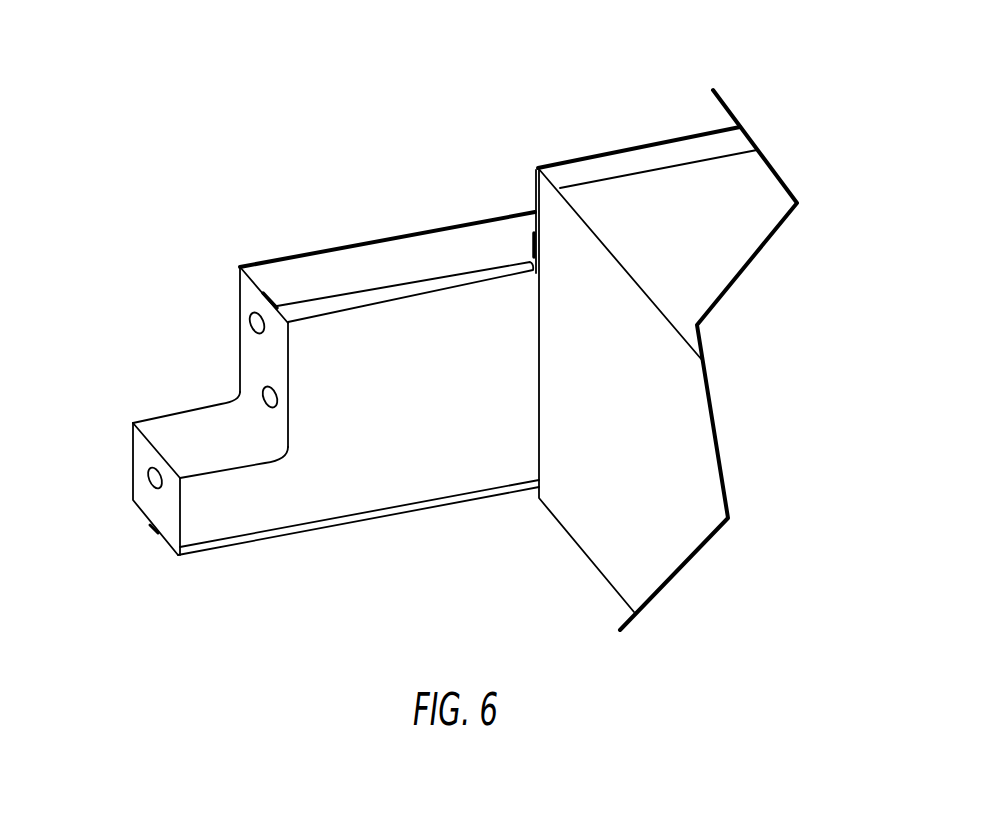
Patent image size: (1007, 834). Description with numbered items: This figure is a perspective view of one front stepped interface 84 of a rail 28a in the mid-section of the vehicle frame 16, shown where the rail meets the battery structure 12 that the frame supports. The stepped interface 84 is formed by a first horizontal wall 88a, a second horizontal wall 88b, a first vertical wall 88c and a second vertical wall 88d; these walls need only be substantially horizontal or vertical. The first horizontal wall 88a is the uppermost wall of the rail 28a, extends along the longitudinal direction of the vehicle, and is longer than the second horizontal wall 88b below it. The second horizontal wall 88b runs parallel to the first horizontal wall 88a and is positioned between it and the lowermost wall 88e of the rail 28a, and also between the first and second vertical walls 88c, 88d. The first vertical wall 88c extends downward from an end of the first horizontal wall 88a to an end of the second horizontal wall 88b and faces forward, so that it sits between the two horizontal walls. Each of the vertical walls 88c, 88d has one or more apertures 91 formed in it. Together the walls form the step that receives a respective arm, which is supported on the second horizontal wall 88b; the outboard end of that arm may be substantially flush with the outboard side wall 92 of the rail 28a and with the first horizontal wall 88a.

The vehicle frame 16 is at (283, 107).
The front stepped interface 84 is at (182, 311).
The first horizontal wall 88a is at (288, 278).
The second horizontal wall 88b is at (188, 428).
The first vertical wall 88c is at (250, 295).
The second vertical wall 88d is at (142, 457).
The lowermost wall 88e is at (162, 541).
The apertures 91 is at (263, 393).
The outboard side wall 92 is at (347, 243).
The rail 28a is at (470, 246).
The battery structure 12 is at (691, 247).